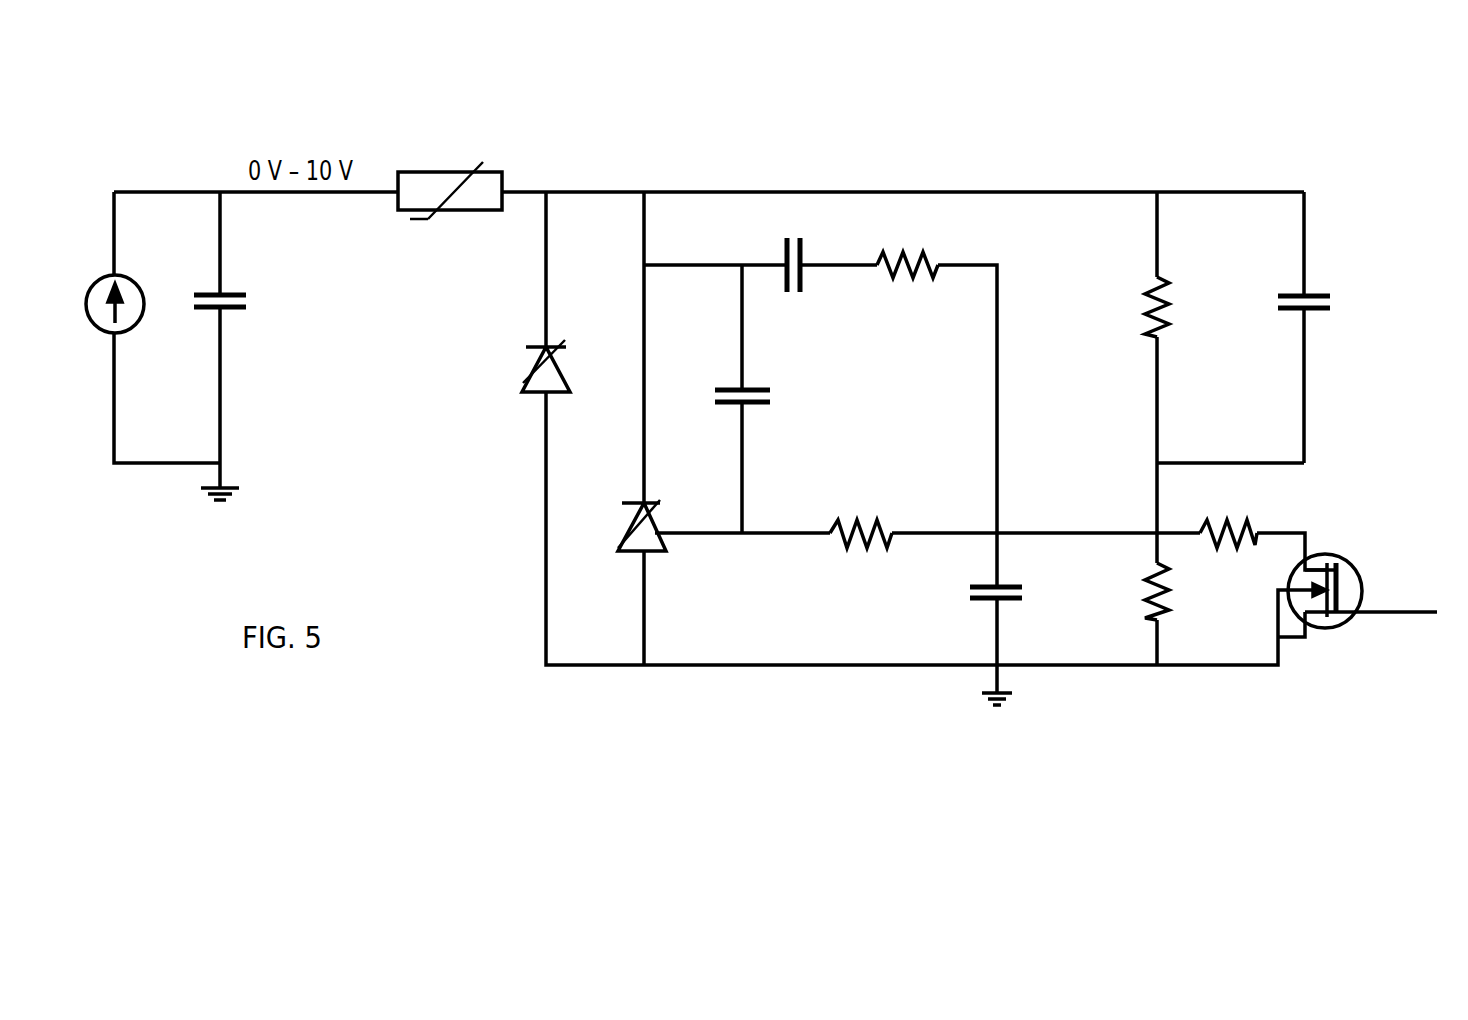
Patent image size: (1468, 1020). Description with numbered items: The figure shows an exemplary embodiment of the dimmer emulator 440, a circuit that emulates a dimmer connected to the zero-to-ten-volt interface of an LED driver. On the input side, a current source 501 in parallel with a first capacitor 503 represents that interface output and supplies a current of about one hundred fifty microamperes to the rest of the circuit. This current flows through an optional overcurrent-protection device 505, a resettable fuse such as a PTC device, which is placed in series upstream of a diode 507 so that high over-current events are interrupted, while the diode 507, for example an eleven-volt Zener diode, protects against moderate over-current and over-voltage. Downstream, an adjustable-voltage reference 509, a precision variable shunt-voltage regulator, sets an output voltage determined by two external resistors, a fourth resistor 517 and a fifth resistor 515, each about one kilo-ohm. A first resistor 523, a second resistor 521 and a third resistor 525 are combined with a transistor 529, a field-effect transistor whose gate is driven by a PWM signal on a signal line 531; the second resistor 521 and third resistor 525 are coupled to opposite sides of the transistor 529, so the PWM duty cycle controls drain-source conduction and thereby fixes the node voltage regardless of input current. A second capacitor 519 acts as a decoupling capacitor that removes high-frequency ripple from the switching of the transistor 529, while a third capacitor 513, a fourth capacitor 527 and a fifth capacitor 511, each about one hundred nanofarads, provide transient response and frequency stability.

The dimmer emulator 440 is at (1135, 118).
The current source 501 is at (132, 326).
The first capacitor 503 is at (232, 292).
The optional overcurrent-protection device 505 is at (485, 163).
The diode 507 is at (556, 370).
The adjustable-voltage reference 509 is at (650, 553).
The fifth capacitor 511 is at (757, 385).
The third capacitor 513 is at (805, 283).
The fifth resistor 515 is at (922, 275).
The fourth resistor 517 is at (870, 545).
The second capacitor 519 is at (1010, 583).
The second resistor 521 is at (1140, 596).
The first resistor 523 is at (1147, 312).
The third resistor 525 is at (1215, 545).
The fourth capacitor 527 is at (1313, 292).
The transistor 529 is at (1350, 563).
The signal line 531 is at (1377, 615).